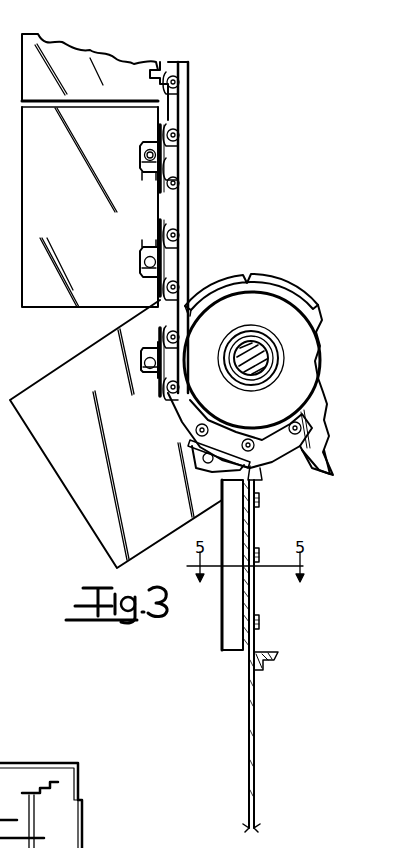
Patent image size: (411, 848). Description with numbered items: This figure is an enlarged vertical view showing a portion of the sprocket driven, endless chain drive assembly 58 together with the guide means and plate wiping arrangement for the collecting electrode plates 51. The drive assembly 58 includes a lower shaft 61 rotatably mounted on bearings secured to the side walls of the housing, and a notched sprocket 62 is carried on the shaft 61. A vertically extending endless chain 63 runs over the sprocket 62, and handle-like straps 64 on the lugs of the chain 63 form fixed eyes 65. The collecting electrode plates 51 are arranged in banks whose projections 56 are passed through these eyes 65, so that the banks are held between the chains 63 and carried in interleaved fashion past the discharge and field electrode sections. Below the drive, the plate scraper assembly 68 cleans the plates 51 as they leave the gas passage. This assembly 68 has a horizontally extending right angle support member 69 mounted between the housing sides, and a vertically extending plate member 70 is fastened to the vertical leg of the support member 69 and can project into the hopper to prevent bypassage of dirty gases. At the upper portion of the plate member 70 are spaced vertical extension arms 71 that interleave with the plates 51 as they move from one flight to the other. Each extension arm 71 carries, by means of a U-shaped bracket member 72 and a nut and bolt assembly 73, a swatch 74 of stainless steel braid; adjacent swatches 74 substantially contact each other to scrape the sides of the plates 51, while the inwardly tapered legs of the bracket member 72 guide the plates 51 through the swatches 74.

The collecting electrode plate 51 is at (69, 229).
The projection 56 is at (152, 144).
The sprocket driven, endless chain drive assembly 58 is at (182, 231).
The lower shaft 61 is at (258, 370).
The sprocket 62 is at (258, 359).
The endless chain 63 is at (178, 153).
The handle-like strap 64 is at (146, 178).
The fixed eye 65 is at (145, 161).
The plate scraper assembly 68 is at (280, 656).
The right angle support member 69 is at (252, 660).
The plate member 70 is at (252, 704).
The vertical extension arm 71 is at (233, 612).
The U-shaped bracket member 72 is at (232, 604).
The nut and bolt assembly 73 is at (258, 622).
The swatch 74 is at (254, 494).